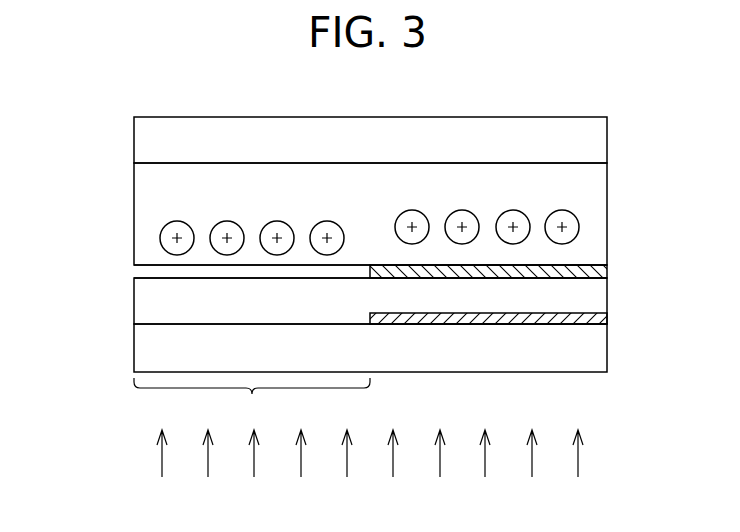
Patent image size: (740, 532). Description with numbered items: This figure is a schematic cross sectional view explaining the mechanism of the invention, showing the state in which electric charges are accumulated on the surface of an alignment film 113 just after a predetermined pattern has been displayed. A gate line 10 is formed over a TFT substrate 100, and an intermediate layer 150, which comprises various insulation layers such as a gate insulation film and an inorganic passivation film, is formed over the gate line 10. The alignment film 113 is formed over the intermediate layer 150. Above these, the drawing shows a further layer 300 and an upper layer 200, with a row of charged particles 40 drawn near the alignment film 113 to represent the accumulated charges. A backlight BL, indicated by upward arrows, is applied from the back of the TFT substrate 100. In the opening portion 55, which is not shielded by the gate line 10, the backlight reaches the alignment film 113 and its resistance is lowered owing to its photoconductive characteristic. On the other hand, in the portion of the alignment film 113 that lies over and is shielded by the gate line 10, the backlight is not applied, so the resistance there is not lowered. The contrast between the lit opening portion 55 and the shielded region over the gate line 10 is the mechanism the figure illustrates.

The upper substrate / color filter substrate 200 is at (590, 146).
The liquid crystal layer 300 is at (590, 187).
The liquid crystal molecules / spacers 40 is at (577, 219).
The alignment film 113 is at (593, 277).
The intermediate layer 150 is at (592, 298).
The gate line 10 is at (590, 327).
The TFT substrate 100 is at (592, 356).
The opening portion 55 is at (252, 402).
The backlight BL is at (370, 467).